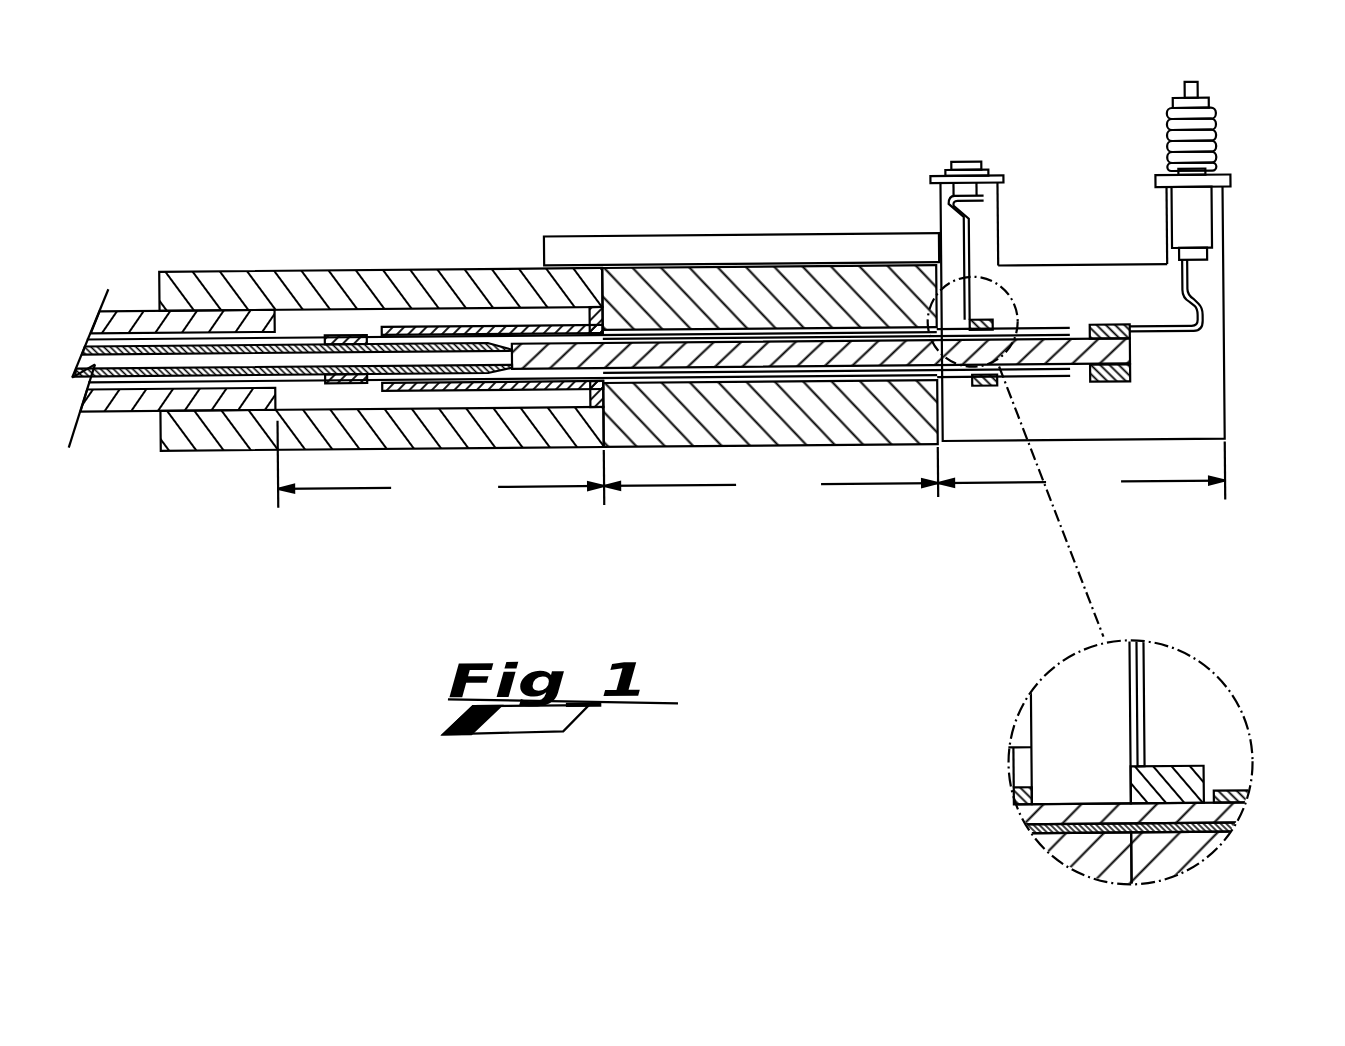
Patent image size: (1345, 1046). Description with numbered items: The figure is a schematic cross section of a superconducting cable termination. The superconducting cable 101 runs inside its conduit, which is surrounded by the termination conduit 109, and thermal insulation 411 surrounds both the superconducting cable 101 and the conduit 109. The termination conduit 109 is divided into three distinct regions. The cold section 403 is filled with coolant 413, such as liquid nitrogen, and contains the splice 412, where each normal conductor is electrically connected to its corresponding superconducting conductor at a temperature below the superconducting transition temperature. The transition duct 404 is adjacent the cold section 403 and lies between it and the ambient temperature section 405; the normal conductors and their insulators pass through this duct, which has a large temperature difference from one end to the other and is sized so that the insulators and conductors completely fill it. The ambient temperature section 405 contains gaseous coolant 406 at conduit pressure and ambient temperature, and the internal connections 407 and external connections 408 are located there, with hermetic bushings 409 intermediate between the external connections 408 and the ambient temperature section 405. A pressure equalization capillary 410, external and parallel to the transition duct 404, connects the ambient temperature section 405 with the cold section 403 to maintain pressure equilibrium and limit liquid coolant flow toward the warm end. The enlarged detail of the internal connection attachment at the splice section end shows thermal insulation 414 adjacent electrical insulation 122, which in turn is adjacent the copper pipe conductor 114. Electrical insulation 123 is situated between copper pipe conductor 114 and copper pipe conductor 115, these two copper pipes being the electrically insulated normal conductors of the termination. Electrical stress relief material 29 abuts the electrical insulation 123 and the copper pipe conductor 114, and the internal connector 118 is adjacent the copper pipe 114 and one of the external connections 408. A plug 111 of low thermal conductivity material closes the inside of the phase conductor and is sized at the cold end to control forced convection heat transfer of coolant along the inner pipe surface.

The superconducting cable 101 is at (122, 408).
The termination conduit 109 is at (222, 447).
The thermal insulation 411 is at (482, 268).
The splice 412 is at (403, 325).
The coolant 413 is at (291, 306).
The pressure equalization capillary 410 is at (601, 236).
The cold section 403 is at (441, 463).
The transition duct 404 is at (771, 476).
The ambient temperature section 405 is at (1082, 474).
The gaseous coolant 406 is at (1130, 422).
The internal connections 407 is at (1224, 397).
The external connections 408 is at (972, 165).
The hermetic bushings 409 is at (946, 173).
The thermal insulation 414 is at (1017, 764).
The internal connector 118 is at (1167, 768).
The electrical insulation 122 is at (1010, 802).
The electrical stress relief material 29 is at (1223, 792).
The copper pipe conductor 114 is at (1012, 814).
The electrical insulation 123 is at (1238, 813).
The plug 111 is at (1073, 873).
The copper pipe conductor 115 is at (1205, 847).